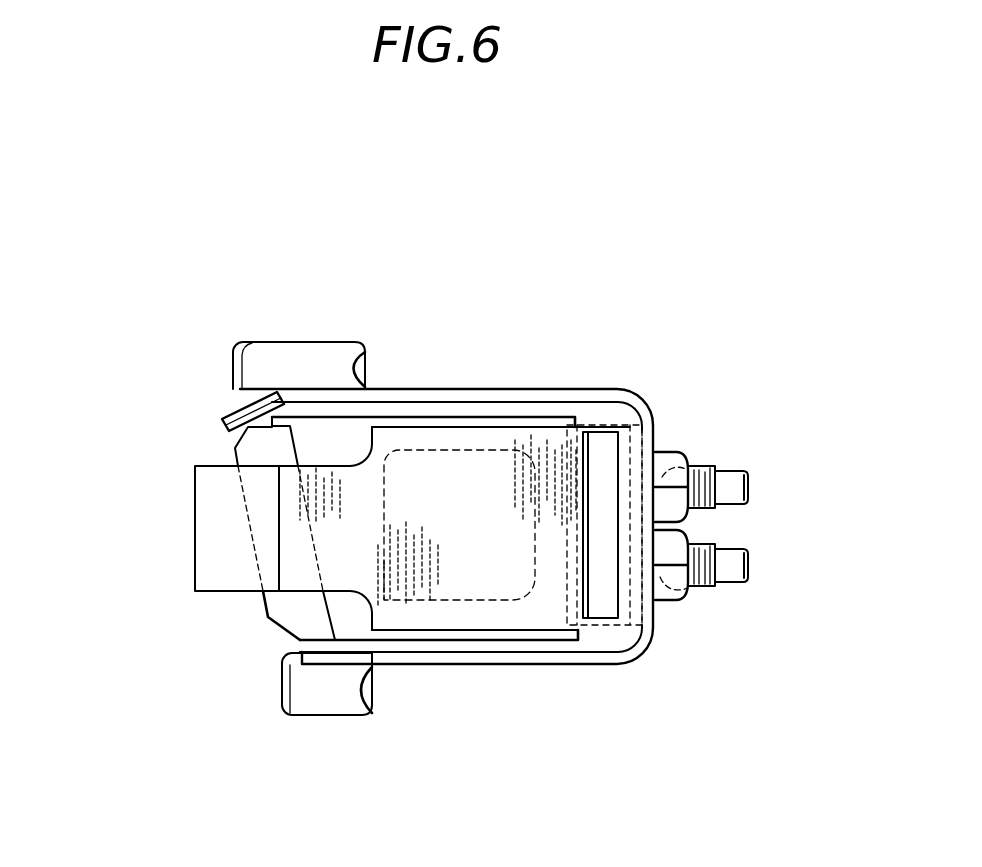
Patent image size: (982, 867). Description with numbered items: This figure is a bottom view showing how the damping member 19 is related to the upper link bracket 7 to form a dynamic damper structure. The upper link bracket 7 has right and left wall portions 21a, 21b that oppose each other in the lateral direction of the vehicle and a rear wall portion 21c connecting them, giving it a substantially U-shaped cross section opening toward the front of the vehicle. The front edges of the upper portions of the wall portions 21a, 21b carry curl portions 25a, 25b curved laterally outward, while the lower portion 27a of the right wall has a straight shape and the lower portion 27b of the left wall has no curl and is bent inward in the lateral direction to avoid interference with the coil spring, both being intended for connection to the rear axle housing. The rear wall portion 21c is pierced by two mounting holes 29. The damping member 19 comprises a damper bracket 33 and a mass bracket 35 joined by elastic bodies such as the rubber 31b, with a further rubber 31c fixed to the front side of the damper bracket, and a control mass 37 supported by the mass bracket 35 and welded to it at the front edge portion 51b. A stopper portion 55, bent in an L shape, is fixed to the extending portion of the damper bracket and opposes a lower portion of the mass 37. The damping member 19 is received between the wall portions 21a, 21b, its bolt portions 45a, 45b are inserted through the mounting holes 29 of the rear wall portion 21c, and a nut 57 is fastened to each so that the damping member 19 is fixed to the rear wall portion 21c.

The upper link bracket 7 is at (524, 514).
The damping member 19 is at (552, 412).
The left wall portion 21a is at (493, 389).
The right wall portion 21b is at (450, 654).
The rear wall portion 21c is at (655, 637).
The curl portion 25a is at (277, 352).
The curl portion 25b is at (333, 697).
The lower portion of front edge of right wall portion 27a is at (222, 419).
The lower portion of left wall portion 27b is at (285, 668).
The mounting hole 29 is at (662, 477).
The rubber 31b is at (492, 600).
The rubber 31c is at (632, 650).
The damper bracket 33 is at (427, 428).
The mass bracket 35 is at (327, 417).
The mass 37 is at (260, 455).
The bolt portion 45a is at (700, 550).
The bolt portion 45b is at (717, 467).
The front edge portion of lower mass horizontal plate portion 51b is at (268, 615).
The stopper portion 55 is at (195, 520).
The nut 57 is at (688, 462).